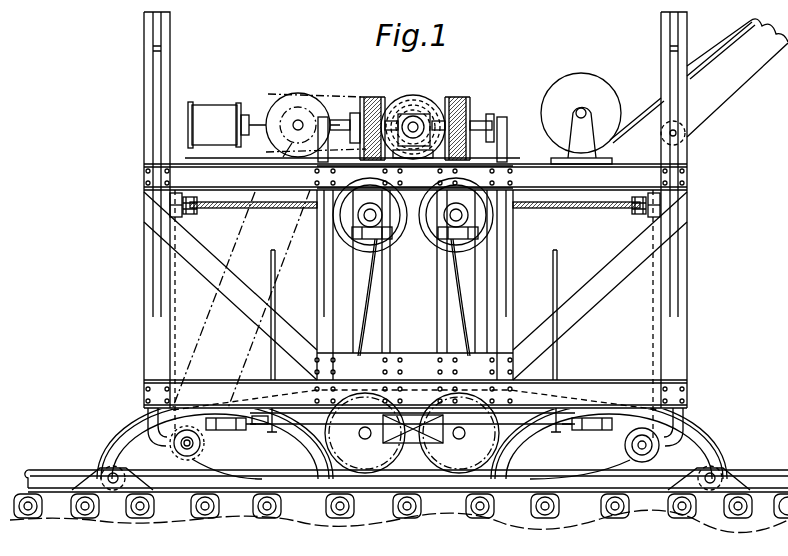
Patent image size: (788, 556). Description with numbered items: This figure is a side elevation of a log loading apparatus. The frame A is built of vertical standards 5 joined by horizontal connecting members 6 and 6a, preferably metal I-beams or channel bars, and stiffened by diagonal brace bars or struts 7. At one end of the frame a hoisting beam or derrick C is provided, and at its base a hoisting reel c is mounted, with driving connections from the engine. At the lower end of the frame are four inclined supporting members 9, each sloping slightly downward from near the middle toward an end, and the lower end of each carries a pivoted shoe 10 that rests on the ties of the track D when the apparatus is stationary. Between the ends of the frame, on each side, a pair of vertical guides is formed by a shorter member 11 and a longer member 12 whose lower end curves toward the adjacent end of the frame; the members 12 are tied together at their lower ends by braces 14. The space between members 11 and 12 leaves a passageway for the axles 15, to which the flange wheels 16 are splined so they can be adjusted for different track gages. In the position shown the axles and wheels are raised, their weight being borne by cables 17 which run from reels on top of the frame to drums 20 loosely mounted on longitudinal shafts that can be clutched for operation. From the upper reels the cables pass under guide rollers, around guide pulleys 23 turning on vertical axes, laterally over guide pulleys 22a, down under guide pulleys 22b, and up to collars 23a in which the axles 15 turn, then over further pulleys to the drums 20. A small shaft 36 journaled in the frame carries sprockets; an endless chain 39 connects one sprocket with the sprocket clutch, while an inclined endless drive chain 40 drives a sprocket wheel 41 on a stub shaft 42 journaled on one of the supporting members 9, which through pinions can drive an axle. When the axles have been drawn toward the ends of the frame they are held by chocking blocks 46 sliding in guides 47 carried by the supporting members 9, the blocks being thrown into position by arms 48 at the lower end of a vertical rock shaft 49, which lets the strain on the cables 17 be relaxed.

The vertical standards 5 is at (143, 293).
The horizontal connecting members 6 is at (415, 177).
The horizontal connecting members 6a is at (415, 394).
The brace bars or struts 7 is at (415, 286).
The inclined supporting members 9 is at (274, 428).
The shoe 10 is at (113, 486).
The guide member 11 is at (353, 310).
The guide member 12 is at (372, 285).
The braces 14 is at (420, 445).
The axles 15 is at (410, 240).
The flange wheels 16 is at (403, 193).
The cables 17 is at (215, 207).
The drums or reels 20 is at (366, 100).
The guide pulleys 22a is at (688, 196).
The guide pulleys 22b is at (634, 446).
The guide pulleys 23 is at (192, 213).
The collars 23a is at (510, 240).
The small shaft 36 is at (298, 125).
The endless chain 39 is at (405, 97).
The endless drive chain 40 is at (240, 241).
The sprocket wheel 41 is at (207, 438).
The stub shaft 42 is at (178, 450).
The chocking blocks 46 is at (600, 446).
The guides 47 is at (585, 429).
The arms 48 is at (266, 426).
The vertical rock shaft 49 is at (272, 366).
The frame A is at (414, 315).
The hoisting beam or derrick C is at (733, 88).
The hoisting reel c is at (615, 108).
The track D is at (400, 497).